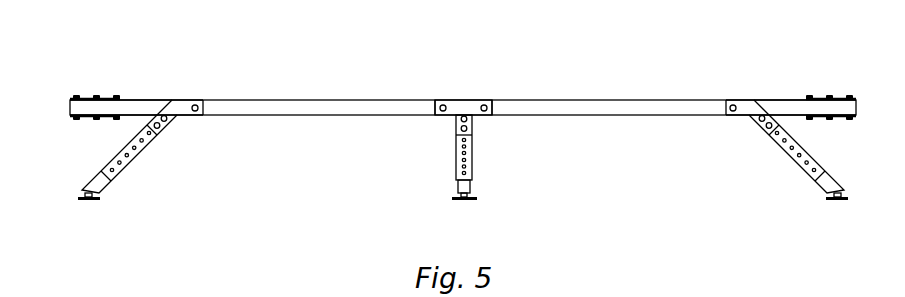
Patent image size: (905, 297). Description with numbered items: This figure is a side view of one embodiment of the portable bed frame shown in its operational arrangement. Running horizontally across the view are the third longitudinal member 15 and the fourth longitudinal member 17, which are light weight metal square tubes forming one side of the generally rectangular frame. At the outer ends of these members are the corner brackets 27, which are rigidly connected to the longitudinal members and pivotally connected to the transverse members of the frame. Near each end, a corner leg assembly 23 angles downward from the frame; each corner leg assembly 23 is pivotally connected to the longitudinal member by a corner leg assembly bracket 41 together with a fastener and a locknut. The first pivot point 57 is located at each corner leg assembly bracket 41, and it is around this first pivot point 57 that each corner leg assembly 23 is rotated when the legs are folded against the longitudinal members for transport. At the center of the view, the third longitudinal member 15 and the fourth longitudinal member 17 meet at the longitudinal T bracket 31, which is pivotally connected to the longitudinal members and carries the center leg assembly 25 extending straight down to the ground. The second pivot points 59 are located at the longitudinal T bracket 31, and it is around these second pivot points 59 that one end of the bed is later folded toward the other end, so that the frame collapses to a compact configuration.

The third longitudinal member 15 is at (607, 100).
The fourth longitudinal member 17 is at (303, 100).
The corner leg assembly 23 is at (135, 158).
The center leg assembly 25 is at (473, 170).
The corner bracket 27 is at (88, 99).
The longitudinal T bracket 31 is at (464, 101).
The corner leg assembly bracket 41 is at (183, 101).
The first pivot point 57 is at (195, 113).
The second pivot point 59 is at (443, 113).